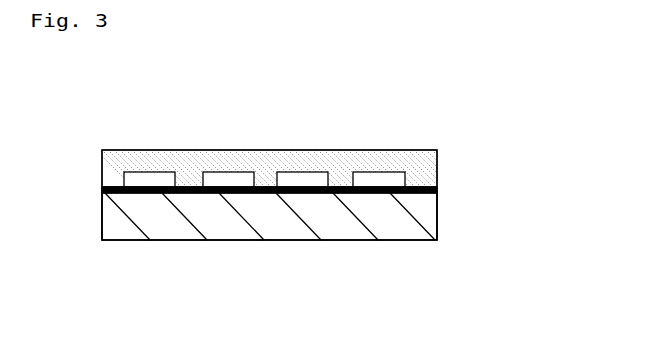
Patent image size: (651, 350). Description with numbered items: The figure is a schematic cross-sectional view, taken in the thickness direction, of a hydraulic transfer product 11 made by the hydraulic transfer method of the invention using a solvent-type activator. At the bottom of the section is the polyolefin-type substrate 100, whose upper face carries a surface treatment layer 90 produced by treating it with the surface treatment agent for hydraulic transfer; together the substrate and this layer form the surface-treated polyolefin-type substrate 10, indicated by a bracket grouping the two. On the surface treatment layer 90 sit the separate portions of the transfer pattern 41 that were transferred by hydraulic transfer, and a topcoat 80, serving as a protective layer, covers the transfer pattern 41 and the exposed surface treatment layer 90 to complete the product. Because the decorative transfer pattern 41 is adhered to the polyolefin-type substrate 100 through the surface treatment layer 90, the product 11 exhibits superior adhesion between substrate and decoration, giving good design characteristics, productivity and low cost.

The hydraulic transfer product 11 is at (145, 267).
The topcoat 80 is at (200, 149).
The transfer pattern 41 is at (312, 173).
The surface treatment layer 90 is at (437, 190).
The polyolefin-type substrate 100 is at (380, 240).
The polyolefin-type substrate surface-treated with a surface treatment agent for hyd 10 is at (537, 192).